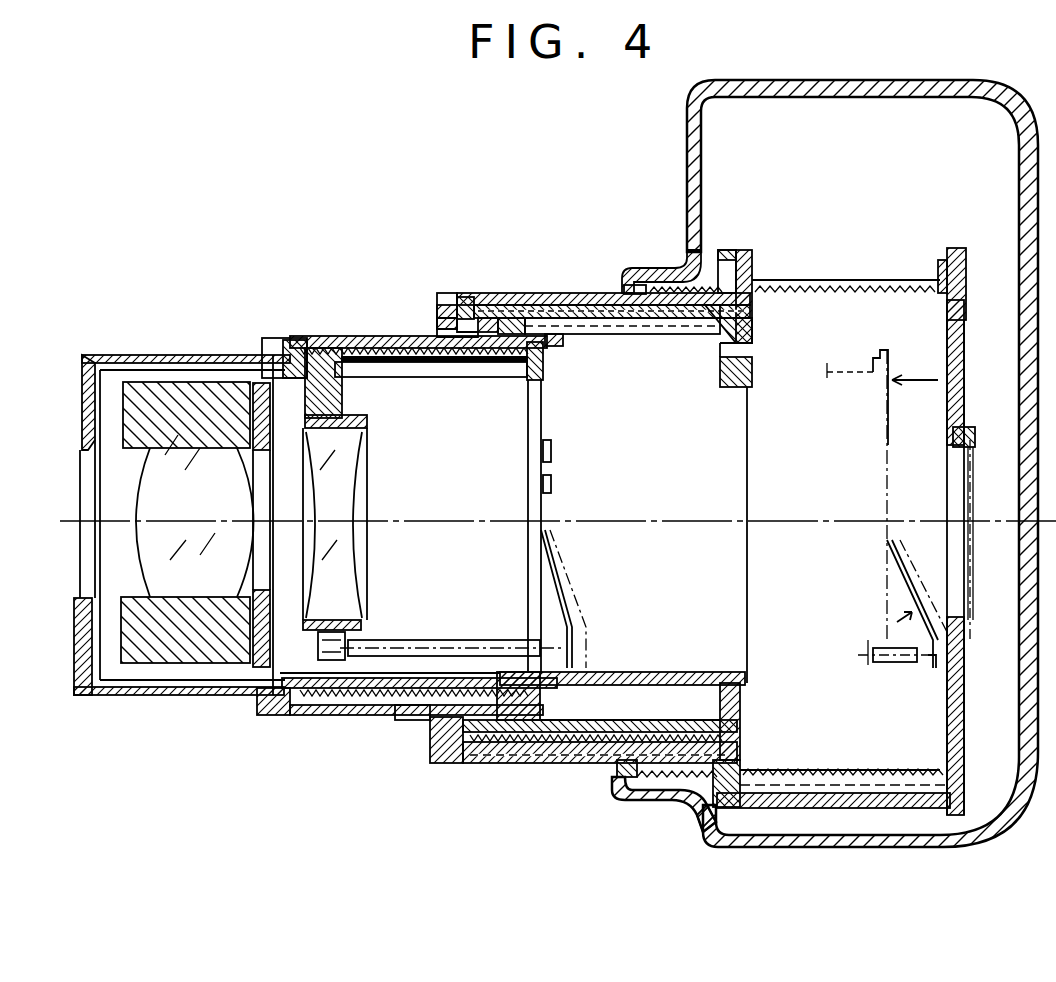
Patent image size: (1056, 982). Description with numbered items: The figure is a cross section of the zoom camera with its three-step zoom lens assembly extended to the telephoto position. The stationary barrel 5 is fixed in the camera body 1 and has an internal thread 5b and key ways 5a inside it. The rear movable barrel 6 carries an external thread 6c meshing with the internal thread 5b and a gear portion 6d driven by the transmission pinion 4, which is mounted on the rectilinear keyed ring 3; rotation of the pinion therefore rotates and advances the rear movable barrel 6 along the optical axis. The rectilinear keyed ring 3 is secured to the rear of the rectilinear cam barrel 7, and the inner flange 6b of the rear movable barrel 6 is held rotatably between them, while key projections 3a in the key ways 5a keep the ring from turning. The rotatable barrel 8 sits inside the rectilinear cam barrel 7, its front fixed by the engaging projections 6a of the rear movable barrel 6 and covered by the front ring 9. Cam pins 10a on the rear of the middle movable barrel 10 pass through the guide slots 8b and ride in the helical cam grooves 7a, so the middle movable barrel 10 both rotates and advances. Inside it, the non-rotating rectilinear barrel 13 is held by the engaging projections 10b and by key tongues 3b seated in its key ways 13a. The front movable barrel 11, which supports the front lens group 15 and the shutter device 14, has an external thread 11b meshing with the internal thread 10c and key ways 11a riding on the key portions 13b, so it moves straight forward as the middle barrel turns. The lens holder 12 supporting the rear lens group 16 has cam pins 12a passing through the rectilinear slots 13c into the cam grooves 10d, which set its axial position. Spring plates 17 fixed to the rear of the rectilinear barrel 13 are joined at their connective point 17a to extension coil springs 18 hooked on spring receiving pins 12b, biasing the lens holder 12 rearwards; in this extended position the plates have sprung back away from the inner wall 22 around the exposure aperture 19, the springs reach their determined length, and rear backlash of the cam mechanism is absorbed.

The camera body 1 is at (686, 118).
The rectilinear keyed ring 3 is at (745, 250).
The key projections 3a is at (743, 770).
The key tongues 3b is at (673, 670).
The transmission pinion 4 is at (728, 250).
The stationary barrel 5 is at (690, 268).
The key ways 5a is at (838, 790).
The internal thread 5b is at (663, 800).
The rear movable barrel 6 is at (526, 293).
The engaging projections 6a is at (462, 300).
The inner flange 6b is at (755, 313).
The external thread 6c is at (623, 795).
The gear portion 6d is at (688, 828).
The rectilinear cam barrel 7 is at (588, 293).
The cam grooves 7a is at (500, 318).
The rotatable barrel 8 is at (437, 328).
The guide slots 8b is at (642, 334).
The front ring 9 is at (445, 312).
The middle movable barrel 10 is at (350, 336).
The cam pins 10a is at (531, 293).
The engaging projections 10b is at (554, 343).
The internal thread 10c is at (347, 715).
The cam grooves 10d is at (313, 338).
The front movable barrel 11 is at (135, 355).
The key ways 11a is at (166, 697).
The external thread 11b is at (320, 715).
The lens holder 12 is at (367, 422).
The cam pins 12a is at (357, 374).
The spring receiving pins 12b is at (318, 656).
The rectilinear barrel 13 is at (548, 352).
The key ways 13a is at (422, 717).
The key portions 13b is at (412, 717).
The rectilinear slots 13c is at (483, 377).
The shutter device 14 is at (133, 432).
The front lens group 15 is at (132, 556).
The rear lens group 16 is at (345, 480).
The spring plates 17 is at (567, 622).
The connective point 17a is at (933, 668).
The extension coil springs 18 is at (447, 640).
The exposure aperture 19 is at (966, 468).
The inner wall 22 is at (955, 447).